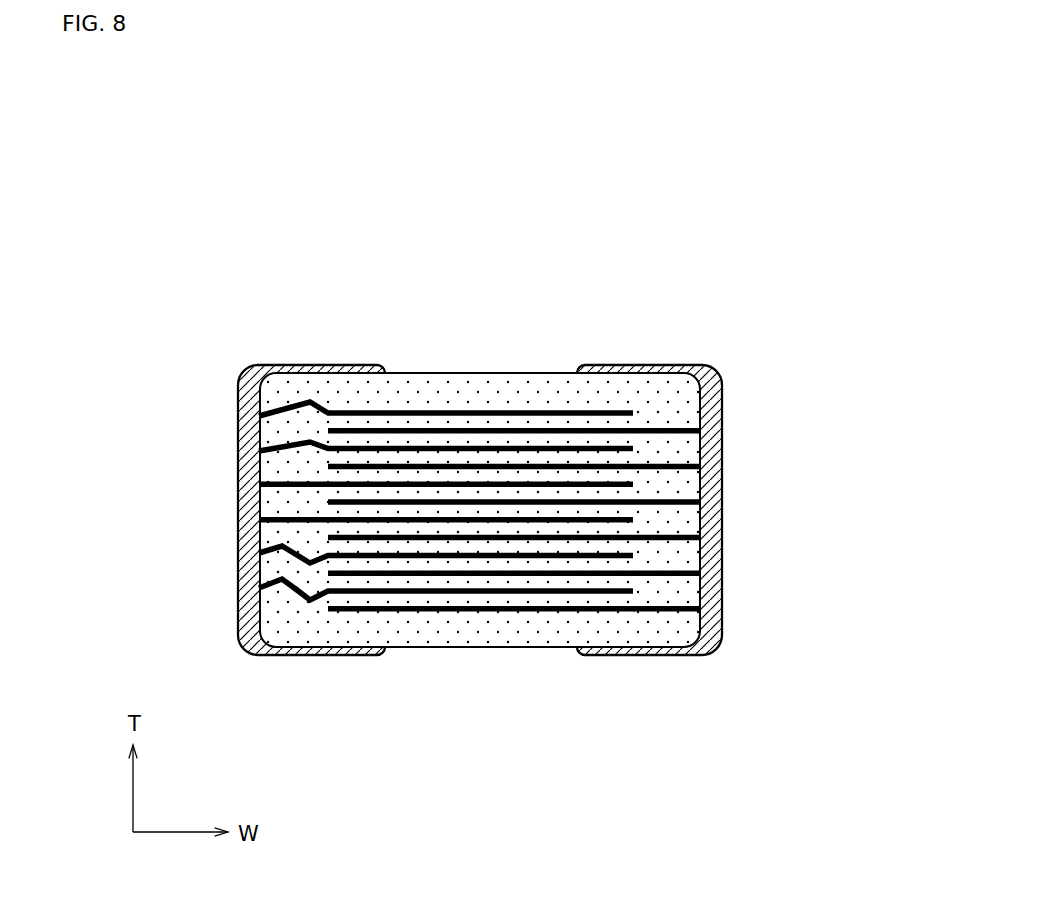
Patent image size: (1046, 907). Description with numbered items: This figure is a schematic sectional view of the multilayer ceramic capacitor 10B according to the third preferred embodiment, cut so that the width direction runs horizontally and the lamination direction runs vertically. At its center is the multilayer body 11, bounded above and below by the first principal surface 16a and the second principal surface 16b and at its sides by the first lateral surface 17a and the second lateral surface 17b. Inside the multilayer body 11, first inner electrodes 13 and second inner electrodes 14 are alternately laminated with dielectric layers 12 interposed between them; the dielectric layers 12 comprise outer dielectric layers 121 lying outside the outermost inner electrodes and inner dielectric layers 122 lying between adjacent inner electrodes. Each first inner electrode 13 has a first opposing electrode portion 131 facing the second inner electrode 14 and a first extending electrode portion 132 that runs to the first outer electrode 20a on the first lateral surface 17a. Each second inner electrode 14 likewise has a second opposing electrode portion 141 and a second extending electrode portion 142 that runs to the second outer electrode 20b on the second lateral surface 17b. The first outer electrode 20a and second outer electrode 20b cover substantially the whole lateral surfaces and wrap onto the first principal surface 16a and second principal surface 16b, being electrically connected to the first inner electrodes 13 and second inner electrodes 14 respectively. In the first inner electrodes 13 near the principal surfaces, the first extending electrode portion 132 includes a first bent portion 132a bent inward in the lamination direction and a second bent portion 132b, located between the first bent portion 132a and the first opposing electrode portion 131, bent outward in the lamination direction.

The multilayer ceramic capacitor 10B is at (507, 208).
The multilayer body 11 is at (565, 373).
The dielectric layer 12 is at (480, 531).
The outer dielectric layer 121 is at (537, 395).
The inner dielectric layer 122 is at (577, 463).
The first inner electrode 13 is at (410, 488).
The first opposing electrode portion 131 is at (400, 408).
The first extending electrode portion 132 is at (313, 393).
The first bent portion 132a is at (282, 592).
The second bent portion 132b is at (309, 607).
The second inner electrode 14 is at (514, 602).
The second opposing electrode portion 141 is at (563, 611).
The second extending electrode portion 142 is at (665, 613).
The first principal surface 16a is at (440, 373).
The second principal surface 16b is at (387, 650).
The first lateral surface 17a is at (260, 425).
The second lateral surface 17b is at (705, 438).
The first outer electrode 20a is at (238, 513).
The second outer electrode 20b is at (722, 498).